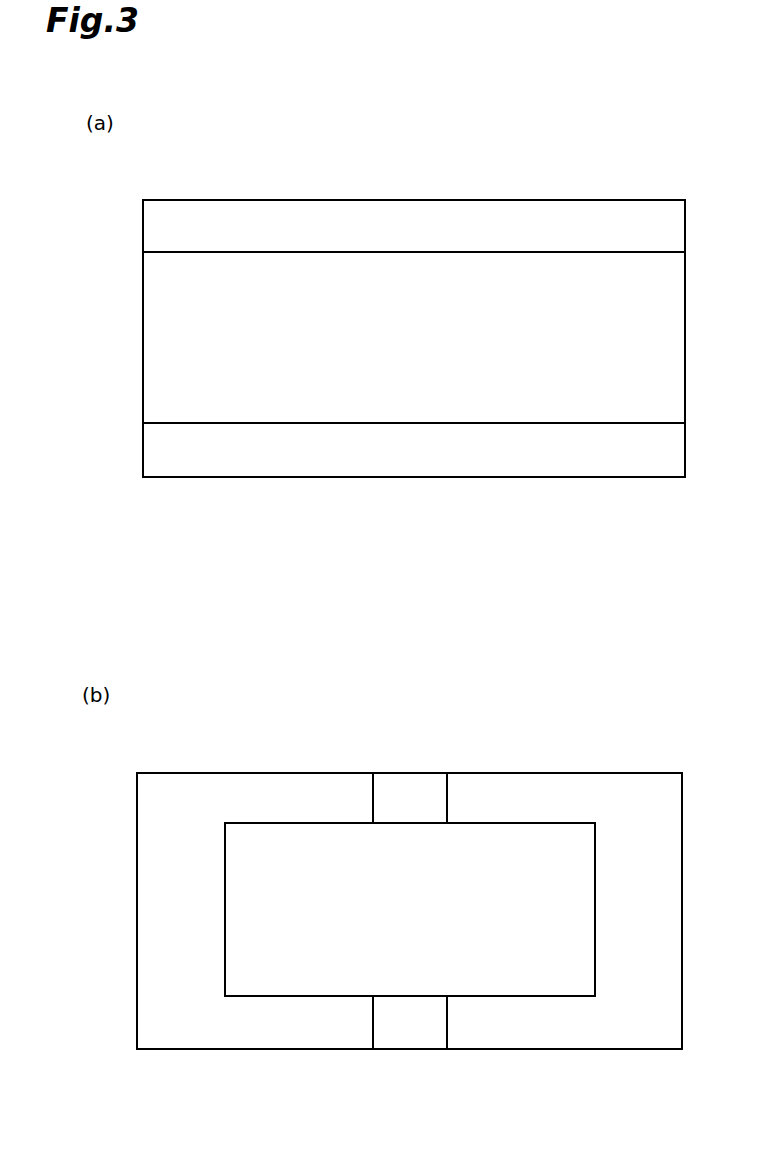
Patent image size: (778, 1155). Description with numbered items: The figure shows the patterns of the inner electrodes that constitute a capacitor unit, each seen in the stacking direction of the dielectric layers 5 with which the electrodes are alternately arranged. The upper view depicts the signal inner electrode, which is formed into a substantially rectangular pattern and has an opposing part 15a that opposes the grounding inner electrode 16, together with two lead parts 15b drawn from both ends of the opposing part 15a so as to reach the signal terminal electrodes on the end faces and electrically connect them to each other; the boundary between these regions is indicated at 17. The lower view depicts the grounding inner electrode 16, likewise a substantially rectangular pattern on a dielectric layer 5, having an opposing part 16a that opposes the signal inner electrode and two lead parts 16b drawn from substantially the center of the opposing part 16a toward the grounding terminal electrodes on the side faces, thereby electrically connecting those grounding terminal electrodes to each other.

The dielectric layer 5 is at (580, 200).
The opposing part 15a is at (408, 277).
The lead part 15b is at (162, 402).
The grounding inner electrode 16 is at (271, 816).
The opposing part 16a is at (278, 975).
The lead part 16b is at (435, 795).
The boundary line / edge of electrode 17 is at (274, 242).